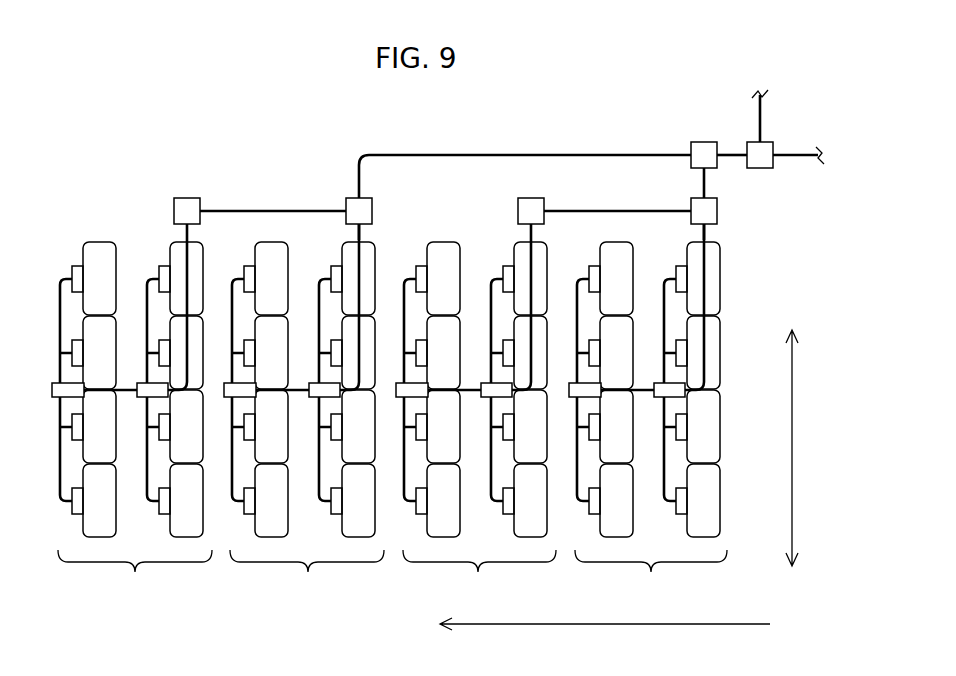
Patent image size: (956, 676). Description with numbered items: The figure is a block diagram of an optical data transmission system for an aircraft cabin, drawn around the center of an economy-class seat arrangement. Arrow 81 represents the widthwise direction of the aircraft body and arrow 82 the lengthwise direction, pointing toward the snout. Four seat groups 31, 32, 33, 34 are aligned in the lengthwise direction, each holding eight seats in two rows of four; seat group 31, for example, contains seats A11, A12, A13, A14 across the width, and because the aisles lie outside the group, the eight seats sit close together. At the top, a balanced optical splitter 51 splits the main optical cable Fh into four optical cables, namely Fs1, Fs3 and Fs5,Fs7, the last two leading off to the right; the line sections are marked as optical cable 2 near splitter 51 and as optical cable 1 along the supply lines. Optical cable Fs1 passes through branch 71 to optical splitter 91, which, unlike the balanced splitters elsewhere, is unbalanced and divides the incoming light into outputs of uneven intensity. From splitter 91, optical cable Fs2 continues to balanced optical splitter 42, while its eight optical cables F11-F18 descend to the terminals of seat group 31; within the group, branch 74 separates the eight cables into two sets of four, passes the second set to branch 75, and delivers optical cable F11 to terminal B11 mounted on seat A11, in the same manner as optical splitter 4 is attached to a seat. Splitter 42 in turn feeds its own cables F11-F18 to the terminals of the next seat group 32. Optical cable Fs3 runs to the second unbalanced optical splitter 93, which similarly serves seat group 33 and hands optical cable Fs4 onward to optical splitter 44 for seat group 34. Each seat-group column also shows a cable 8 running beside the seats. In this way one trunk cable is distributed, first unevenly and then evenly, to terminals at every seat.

The optical cable 1 is at (712, 176).
The optical cable 2 is at (801, 149).
The optical splitter 4 is at (649, 385).
The hydrogen supply pipe 8 is at (712, 347).
The seat group 31 is at (665, 415).
The seat group 32 is at (476, 415).
The seat group 33 is at (304, 415).
The seat group 34 is at (132, 415).
The balanced optical splitter 42 is at (518, 210).
The optical splitter 44 is at (174, 210).
The balanced optical splitter 51 is at (758, 169).
The branch 71 is at (706, 142).
The branch 74 is at (655, 398).
The branch 75 is at (572, 398).
The arrow 81 is at (794, 492).
The arrow 82 is at (743, 620).
The unbalanced optical splitter 91 is at (718, 213).
The unbalanced optical splitter 93 is at (372, 211).
The seat A11 is at (720, 258).
The seat A12 is at (720, 343).
The seat A13 is at (720, 422).
The seat A14 is at (720, 497).
The terminal B11 is at (677, 268).
The optical cable F11 is at (666, 318).
The optical cables F11-F18 is at (708, 292).
The optical cable Fh is at (764, 114).
The optical cable Fs1 is at (701, 189).
The optical cable Fs2 is at (575, 208).
The optical cable Fs3 is at (456, 153).
The optical cable Fs4 is at (238, 208).
The optical cables Fs5,Fs7 is at (811, 163).